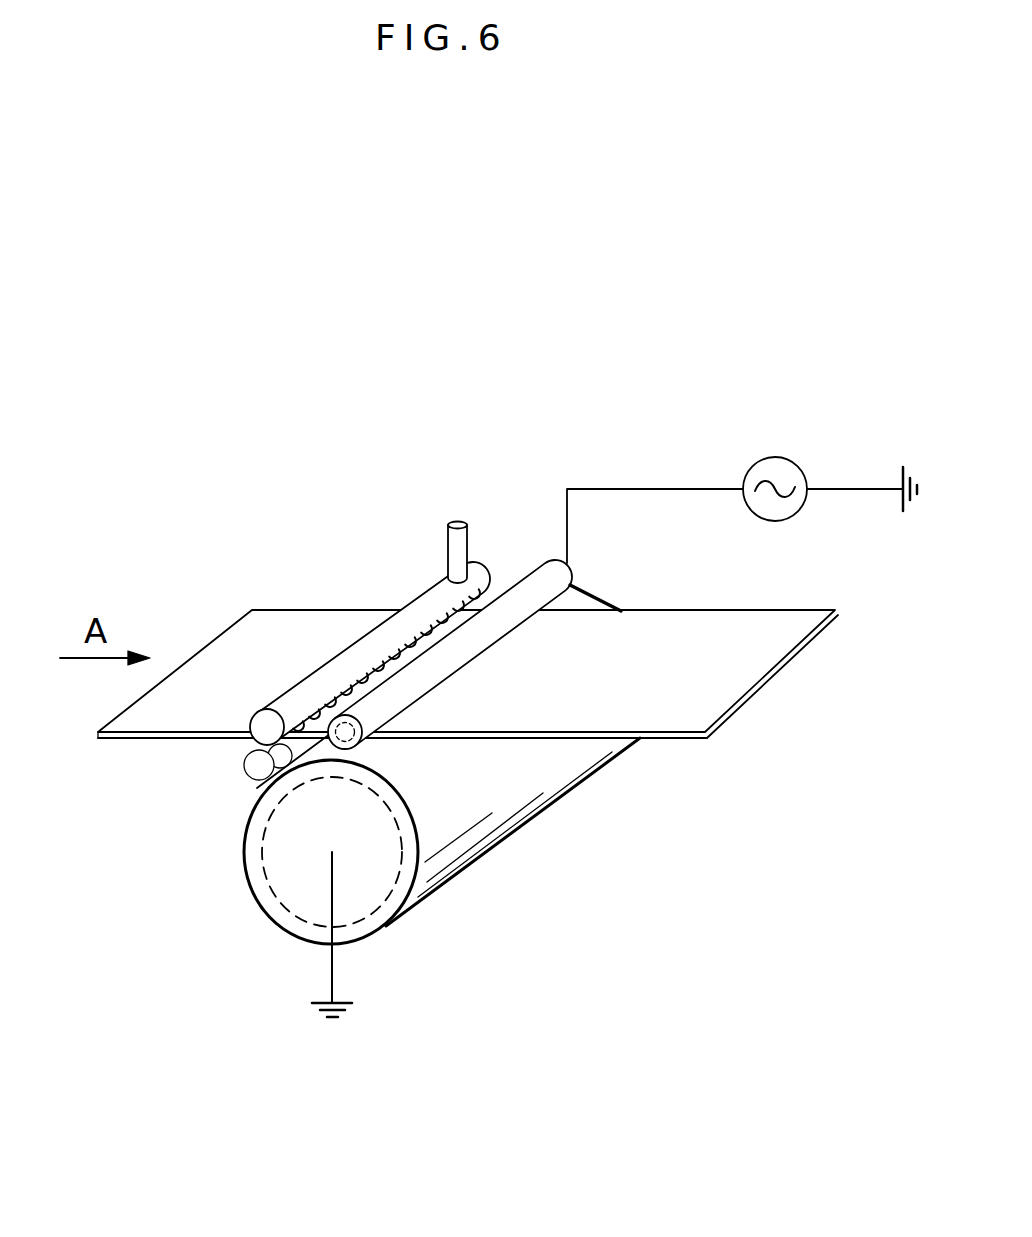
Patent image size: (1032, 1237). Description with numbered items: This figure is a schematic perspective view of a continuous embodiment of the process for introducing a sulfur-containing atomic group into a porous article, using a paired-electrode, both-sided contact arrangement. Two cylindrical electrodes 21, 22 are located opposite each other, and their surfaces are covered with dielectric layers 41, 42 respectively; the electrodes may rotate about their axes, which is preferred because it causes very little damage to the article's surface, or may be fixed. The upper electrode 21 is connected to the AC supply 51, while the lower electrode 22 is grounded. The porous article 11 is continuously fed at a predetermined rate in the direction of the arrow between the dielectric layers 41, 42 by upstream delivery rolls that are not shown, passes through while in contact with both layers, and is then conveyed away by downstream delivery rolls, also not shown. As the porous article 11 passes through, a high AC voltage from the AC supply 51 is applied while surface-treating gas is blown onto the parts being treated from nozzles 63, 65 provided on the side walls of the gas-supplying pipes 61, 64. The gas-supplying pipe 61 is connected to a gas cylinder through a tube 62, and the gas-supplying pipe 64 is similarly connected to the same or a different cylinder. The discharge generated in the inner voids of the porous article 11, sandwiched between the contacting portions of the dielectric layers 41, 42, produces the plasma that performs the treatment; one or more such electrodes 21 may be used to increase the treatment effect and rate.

The porous article 11 is at (688, 626).
The cylindrical electrode 21 is at (337, 755).
The cylindrical electrode 22 is at (283, 870).
The dielectric layer 41 is at (538, 585).
The dielectric layer 42 is at (387, 930).
The AC supply 51 is at (779, 458).
The gas-supplying pipe 61 is at (340, 657).
The tube 62 is at (446, 543).
The nozzles 63 is at (293, 730).
The gas-supplying pipe 64 is at (250, 772).
The nozzles 65 is at (255, 784).